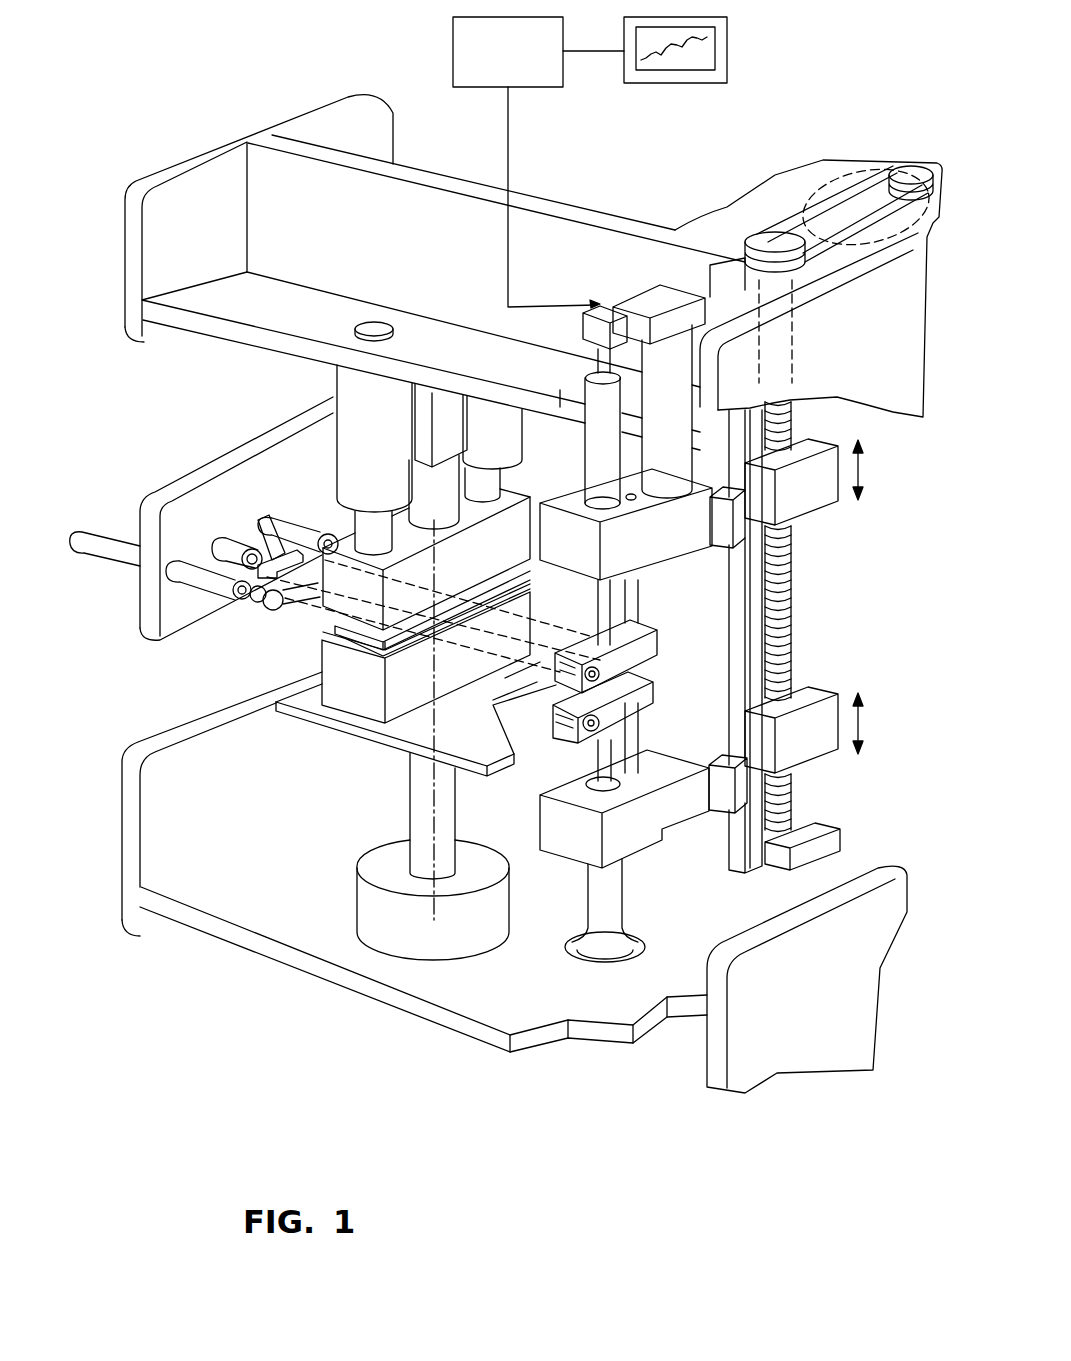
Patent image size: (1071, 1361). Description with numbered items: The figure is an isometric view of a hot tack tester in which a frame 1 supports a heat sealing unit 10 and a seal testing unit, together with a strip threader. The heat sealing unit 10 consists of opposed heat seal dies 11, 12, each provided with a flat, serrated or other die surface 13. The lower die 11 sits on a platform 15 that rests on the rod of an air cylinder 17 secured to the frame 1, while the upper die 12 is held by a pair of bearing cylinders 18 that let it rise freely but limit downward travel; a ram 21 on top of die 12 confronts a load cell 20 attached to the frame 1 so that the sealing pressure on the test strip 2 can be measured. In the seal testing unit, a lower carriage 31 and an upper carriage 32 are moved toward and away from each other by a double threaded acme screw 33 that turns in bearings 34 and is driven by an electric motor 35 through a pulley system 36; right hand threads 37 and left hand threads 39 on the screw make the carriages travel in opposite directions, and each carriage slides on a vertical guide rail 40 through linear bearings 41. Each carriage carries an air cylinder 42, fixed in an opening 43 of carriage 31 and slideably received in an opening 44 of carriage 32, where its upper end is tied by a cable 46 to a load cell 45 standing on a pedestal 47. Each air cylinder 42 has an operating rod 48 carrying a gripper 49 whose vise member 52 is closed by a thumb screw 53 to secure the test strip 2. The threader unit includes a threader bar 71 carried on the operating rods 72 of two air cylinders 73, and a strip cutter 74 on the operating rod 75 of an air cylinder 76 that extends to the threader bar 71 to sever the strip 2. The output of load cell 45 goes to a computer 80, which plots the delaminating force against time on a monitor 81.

The frame 1 is at (196, 147).
The test strip 2 is at (503, 682).
The heat sealing unit 10 is at (264, 722).
The heat seal die 11 is at (523, 602).
The heat seal die 12 is at (512, 497).
The die surface 13 is at (367, 643).
The platform 15 is at (300, 700).
The air cylinder 17 is at (367, 902).
The bearing cylinder 18 is at (343, 393).
The load cell 20 is at (441, 425).
The ram 21 is at (434, 687).
The carriage 31 is at (624, 809).
The carriage 32 is at (626, 524).
The acme screw 33 is at (796, 534).
The bearing 34 is at (810, 830).
The electric motor 35 is at (892, 167).
The pulley system 36 is at (833, 197).
The right hand threads 37 is at (781, 408).
The left hand threads 39 is at (790, 653).
The vertical guide rail 40 is at (735, 625).
The linear bearing 41 is at (725, 532).
The air cylinder 42 is at (597, 437).
The opening 43 is at (587, 777).
The opening 44 is at (590, 502).
The load cell 45 is at (644, 300).
The cable 46 is at (592, 364).
The pedestal 47 is at (667, 411).
The operating rod 48 is at (603, 601).
The gripper 49 is at (646, 620).
The vise member 52 is at (655, 641).
The thumb screw 53 is at (601, 672).
The threader bar 71 is at (287, 605).
The operating rod 72 is at (328, 534).
The air cylinder 73 is at (297, 523).
The strip cutter 74 is at (283, 528).
The operating rod 75 is at (258, 532).
The air cylinder 76 is at (233, 547).
The computer 80 is at (453, 56).
The monitor 81 is at (727, 62).